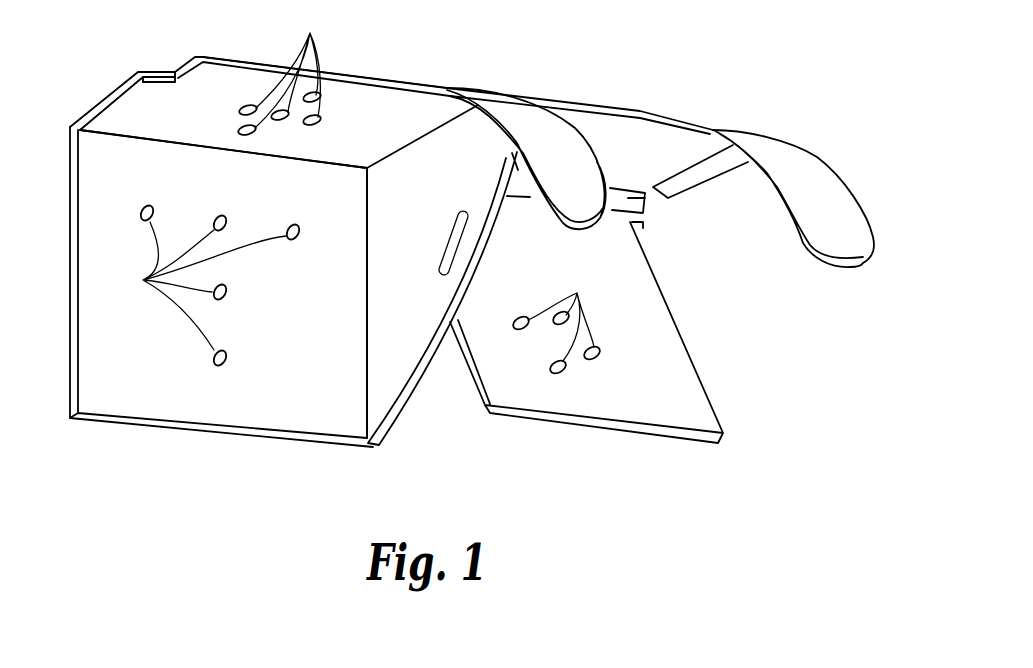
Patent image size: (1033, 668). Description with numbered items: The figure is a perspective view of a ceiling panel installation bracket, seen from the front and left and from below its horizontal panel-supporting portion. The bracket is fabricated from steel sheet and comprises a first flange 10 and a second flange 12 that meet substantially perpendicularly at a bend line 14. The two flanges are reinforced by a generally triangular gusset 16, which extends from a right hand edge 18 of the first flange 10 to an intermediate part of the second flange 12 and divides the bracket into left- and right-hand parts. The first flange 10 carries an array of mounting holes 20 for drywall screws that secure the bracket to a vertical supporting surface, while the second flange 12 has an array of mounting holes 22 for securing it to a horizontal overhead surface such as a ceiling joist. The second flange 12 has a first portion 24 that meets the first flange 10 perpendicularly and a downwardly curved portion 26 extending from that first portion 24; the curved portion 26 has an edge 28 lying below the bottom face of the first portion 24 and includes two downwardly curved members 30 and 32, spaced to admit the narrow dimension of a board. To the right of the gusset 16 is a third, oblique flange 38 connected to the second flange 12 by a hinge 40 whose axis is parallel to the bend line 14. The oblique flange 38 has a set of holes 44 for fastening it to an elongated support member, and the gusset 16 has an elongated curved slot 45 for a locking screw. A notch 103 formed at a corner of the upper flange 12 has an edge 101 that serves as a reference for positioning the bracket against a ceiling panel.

The first flange 10 is at (175, 383).
The second flange 12 is at (155, 105).
The bend line 14 is at (263, 153).
The gusset 16 is at (400, 365).
The right hand edge 18 is at (363, 302).
The mounting holes 20 is at (143, 280).
The mounting holes 22 is at (310, 33).
The first portion 24 is at (360, 127).
The downwardly curved portion 26 is at (613, 104).
The edge 28 is at (680, 118).
The downwardly curved member 30 is at (527, 127).
The downwardly curved member 32 is at (787, 160).
The third oblique flange 38 is at (670, 390).
The hinge 40 is at (630, 201).
The holes 44 is at (577, 293).
The curved slot 45 is at (444, 240).
The edge 101 is at (153, 71).
The notch 103 is at (169, 66).